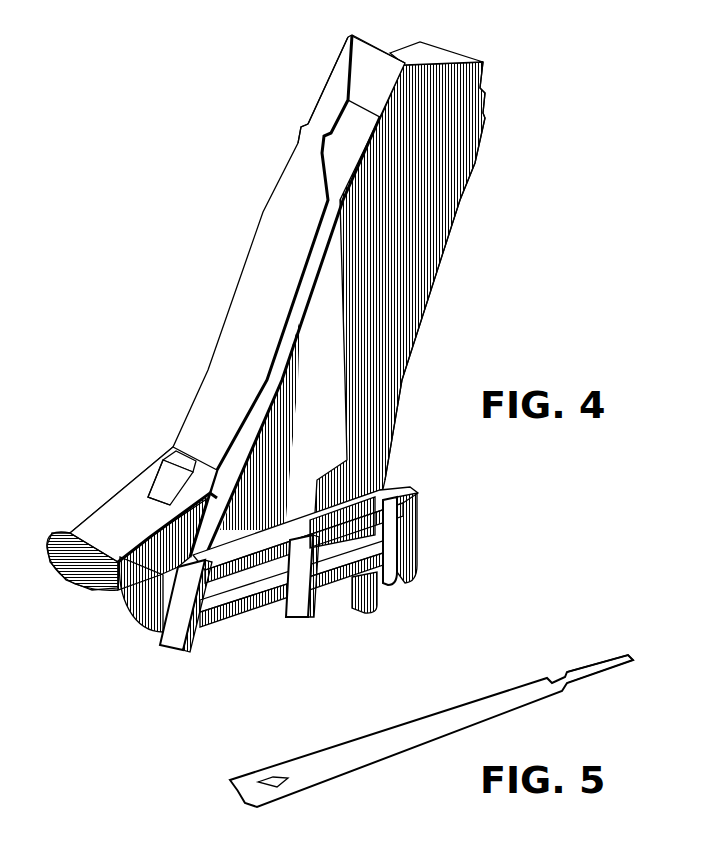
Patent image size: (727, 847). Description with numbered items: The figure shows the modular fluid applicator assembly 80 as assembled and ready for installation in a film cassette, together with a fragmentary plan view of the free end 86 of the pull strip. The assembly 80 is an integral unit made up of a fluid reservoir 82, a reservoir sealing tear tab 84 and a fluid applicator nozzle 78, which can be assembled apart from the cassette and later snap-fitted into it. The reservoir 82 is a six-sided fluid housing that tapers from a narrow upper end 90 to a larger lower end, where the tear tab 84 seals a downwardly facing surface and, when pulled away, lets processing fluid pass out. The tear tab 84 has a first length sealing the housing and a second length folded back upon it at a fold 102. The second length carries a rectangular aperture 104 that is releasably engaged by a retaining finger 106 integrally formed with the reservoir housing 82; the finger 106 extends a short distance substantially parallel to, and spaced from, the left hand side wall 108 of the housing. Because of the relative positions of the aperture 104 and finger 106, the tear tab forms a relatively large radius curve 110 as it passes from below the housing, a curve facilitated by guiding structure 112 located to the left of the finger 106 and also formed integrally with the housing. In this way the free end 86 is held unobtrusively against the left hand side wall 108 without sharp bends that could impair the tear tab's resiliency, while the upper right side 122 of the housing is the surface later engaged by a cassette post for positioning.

In FIG. 4, the fluid applicator nozzle 78 is at (340, 580).
In FIG. 4, the modular fluid applicator assembly 80 is at (462, 260).
In FIG. 4, the fluid reservoir 82 is at (331, 356).
In FIG. 4, the reservoir sealing tear tab 84 is at (225, 355).
In FIG. 5, the reservoir sealing tear tab 84 is at (430, 750).
In FIG. 4, the free end of the tear tab 86 is at (327, 105).
In FIG. 5, the free end of the tear tab 86 is at (600, 672).
In FIG. 4, the upper end of the reservoir housing 90 is at (430, 50).
In FIG. 4, the fold 102 is at (367, 537).
In FIG. 4, the rectangular aperture 104 is at (147, 497).
In FIG. 5, the rectangular aperture 104 is at (280, 782).
In FIG. 4, the retaining finger 106 is at (183, 468).
In FIG. 4, the left hand side wall of the reservoir housing 108 is at (345, 155).
In FIG. 4, the large radius curve 110 is at (103, 520).
In FIG. 4, the guiding structure 112 is at (130, 620).
In FIG. 4, the upper right side of the reservoir housing 122 is at (477, 145).